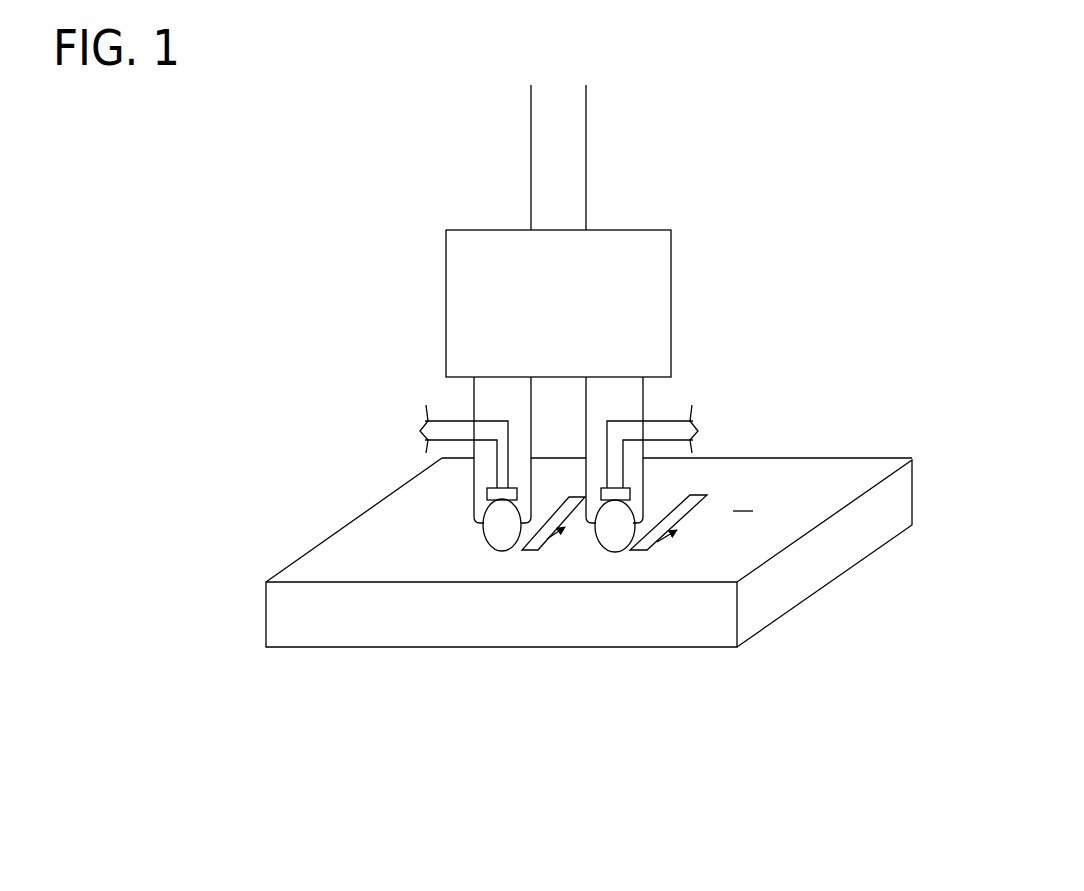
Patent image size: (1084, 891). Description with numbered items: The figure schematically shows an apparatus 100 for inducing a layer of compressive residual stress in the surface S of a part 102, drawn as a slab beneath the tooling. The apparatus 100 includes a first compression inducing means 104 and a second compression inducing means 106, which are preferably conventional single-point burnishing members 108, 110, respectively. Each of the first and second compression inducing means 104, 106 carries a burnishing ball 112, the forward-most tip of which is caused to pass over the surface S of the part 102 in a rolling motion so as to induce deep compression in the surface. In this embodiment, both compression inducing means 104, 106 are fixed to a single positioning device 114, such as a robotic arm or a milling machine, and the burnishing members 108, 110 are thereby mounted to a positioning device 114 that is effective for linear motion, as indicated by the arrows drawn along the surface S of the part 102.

The apparatus 100 is at (805, 158).
The part 102 is at (333, 567).
The first compression inducing means 104 is at (420, 378).
The second compression inducing means 106 is at (716, 379).
The burnishing member 108 is at (480, 482).
The burnishing member 110 is at (638, 482).
The burnishing ball 112 is at (500, 526).
The single positioning device 114 is at (553, 152).